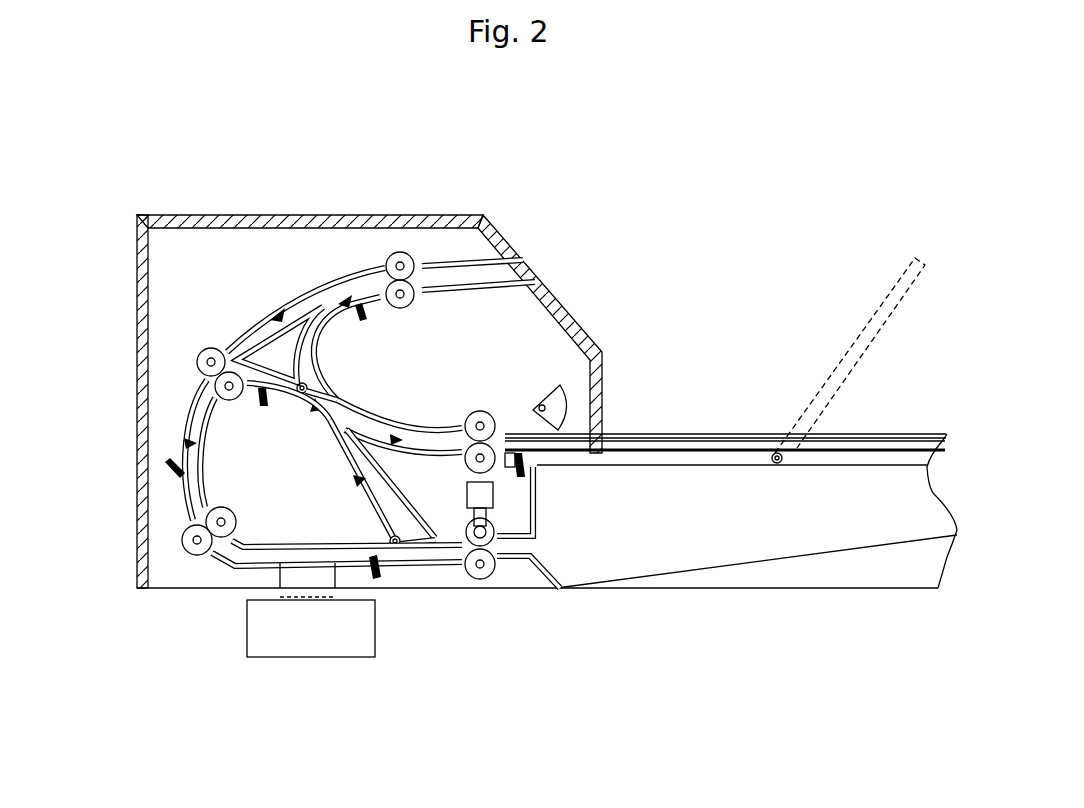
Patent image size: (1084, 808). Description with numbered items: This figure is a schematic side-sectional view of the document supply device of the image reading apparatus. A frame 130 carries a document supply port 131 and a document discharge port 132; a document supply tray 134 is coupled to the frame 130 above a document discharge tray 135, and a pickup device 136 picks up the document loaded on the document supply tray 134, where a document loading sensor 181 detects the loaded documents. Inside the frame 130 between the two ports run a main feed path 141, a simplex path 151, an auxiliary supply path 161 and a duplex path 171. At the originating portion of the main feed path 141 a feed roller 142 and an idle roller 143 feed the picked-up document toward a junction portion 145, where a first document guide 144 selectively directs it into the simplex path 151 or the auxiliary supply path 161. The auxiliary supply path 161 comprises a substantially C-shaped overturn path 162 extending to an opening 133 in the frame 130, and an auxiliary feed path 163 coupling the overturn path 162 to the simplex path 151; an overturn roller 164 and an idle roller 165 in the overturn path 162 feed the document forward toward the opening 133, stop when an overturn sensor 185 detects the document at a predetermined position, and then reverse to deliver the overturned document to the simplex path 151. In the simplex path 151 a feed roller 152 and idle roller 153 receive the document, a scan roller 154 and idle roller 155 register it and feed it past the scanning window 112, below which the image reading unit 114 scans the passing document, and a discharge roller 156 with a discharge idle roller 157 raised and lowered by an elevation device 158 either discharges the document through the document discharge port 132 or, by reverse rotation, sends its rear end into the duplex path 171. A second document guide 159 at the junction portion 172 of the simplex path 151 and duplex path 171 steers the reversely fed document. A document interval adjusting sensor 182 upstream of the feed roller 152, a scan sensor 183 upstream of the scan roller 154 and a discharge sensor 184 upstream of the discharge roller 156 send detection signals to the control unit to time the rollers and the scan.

The scanning window 112 is at (290, 600).
The image reading unit 114 is at (343, 645).
The frame 130 is at (137, 548).
The document supply port 131 is at (612, 420).
The document discharge port 132 is at (547, 565).
The opening 133 is at (540, 266).
The document supply tray 134 is at (779, 472).
The document discharge tray 135 is at (742, 565).
The pickup device 136 is at (567, 390).
The main feed path 141 is at (395, 433).
The feed roller 142 is at (486, 411).
The idle roller 143 is at (472, 410).
The first document guide 144 is at (315, 408).
The junction portion 145 is at (332, 398).
The simplex path 151 is at (183, 443).
The feed roller 152 is at (197, 356).
The idle roller 153 is at (215, 392).
The scan roller 154 is at (228, 537).
The idle roller 155 is at (192, 555).
The discharge roller 156 is at (492, 578).
The discharge idle roller 157 is at (495, 530).
The elevation device 158 is at (494, 494).
The second document guide 159 is at (438, 570).
The auxiliary supply path 161 is at (379, 260).
The overturn path 162 is at (335, 218).
The auxiliary feed path 163 is at (258, 218).
The overturn roller 164 is at (415, 298).
The idle roller 165 is at (399, 252).
The duplex path 171 is at (358, 482).
The junction portion 172 is at (410, 530).
The document loading sensor 181 is at (526, 470).
The document interval adjusting sensor 182 is at (262, 400).
The scan sensor 183 is at (168, 472).
The discharge sensor 184 is at (378, 572).
The overturn sensor 185 is at (368, 320).